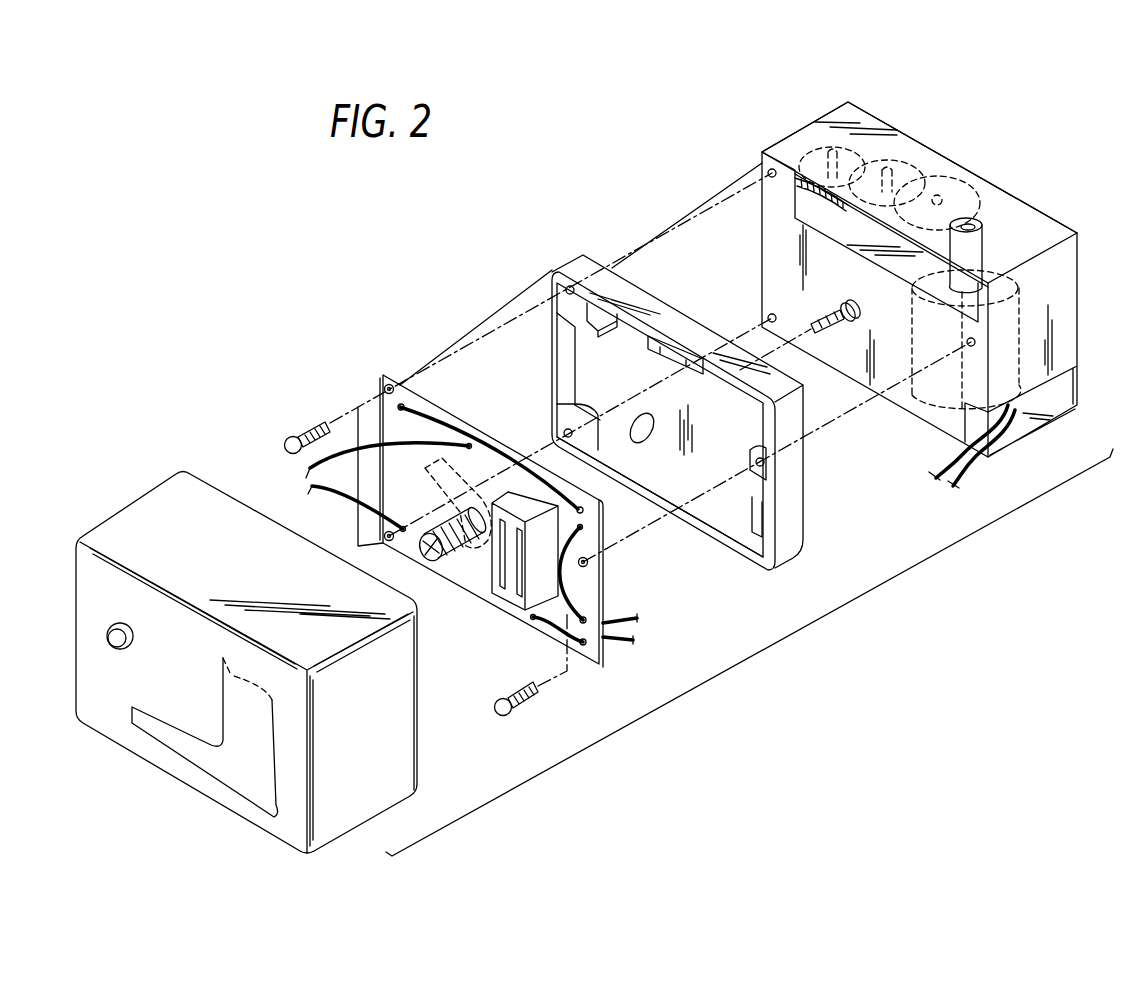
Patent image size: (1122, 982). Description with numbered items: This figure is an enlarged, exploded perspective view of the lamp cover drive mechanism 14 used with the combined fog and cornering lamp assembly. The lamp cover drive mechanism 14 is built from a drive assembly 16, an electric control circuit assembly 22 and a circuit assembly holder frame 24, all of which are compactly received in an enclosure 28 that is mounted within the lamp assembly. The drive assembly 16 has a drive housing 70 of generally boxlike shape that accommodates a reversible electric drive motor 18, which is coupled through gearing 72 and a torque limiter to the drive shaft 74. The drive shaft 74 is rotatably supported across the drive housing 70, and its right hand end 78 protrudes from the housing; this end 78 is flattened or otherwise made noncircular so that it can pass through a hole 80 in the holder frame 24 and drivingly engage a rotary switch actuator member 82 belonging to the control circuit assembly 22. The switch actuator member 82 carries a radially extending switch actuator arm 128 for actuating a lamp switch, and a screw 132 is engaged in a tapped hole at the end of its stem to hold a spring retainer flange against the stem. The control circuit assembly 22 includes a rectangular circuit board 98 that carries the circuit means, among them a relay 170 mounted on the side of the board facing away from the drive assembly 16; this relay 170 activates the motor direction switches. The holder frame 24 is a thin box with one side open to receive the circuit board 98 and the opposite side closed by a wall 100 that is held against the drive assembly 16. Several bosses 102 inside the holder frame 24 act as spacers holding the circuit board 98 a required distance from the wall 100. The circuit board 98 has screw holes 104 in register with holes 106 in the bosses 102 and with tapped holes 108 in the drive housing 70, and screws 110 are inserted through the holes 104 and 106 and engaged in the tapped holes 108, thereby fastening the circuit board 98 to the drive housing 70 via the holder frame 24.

The lamp cover drive mechanism 14 is at (803, 624).
The drive assembly 16 is at (792, 124).
The reversible electric drive motor 18 is at (928, 403).
The electric control circuit assembly 22 is at (610, 593).
The circuit assembly holder frame 24 is at (797, 540).
The enclosure 28 is at (165, 487).
The drive housing 70 is at (1007, 198).
The gearing 72 is at (962, 185).
The drive shaft 74 is at (821, 314).
The right hand end of drive shaft 78 is at (827, 333).
The hole 80 is at (641, 416).
The rotary switch actuator member 82 is at (453, 560).
The circuit board 98 is at (394, 373).
The wall 100 is at (657, 462).
The bosses 102 is at (575, 316).
The screw holes 104 is at (383, 385).
The holes 106 is at (565, 290).
The tapped holes 108 is at (768, 171).
The screws 110 is at (292, 432).
The switch actuator arm 128 is at (451, 466).
The screw 132 is at (418, 548).
The relay 170 is at (503, 585).